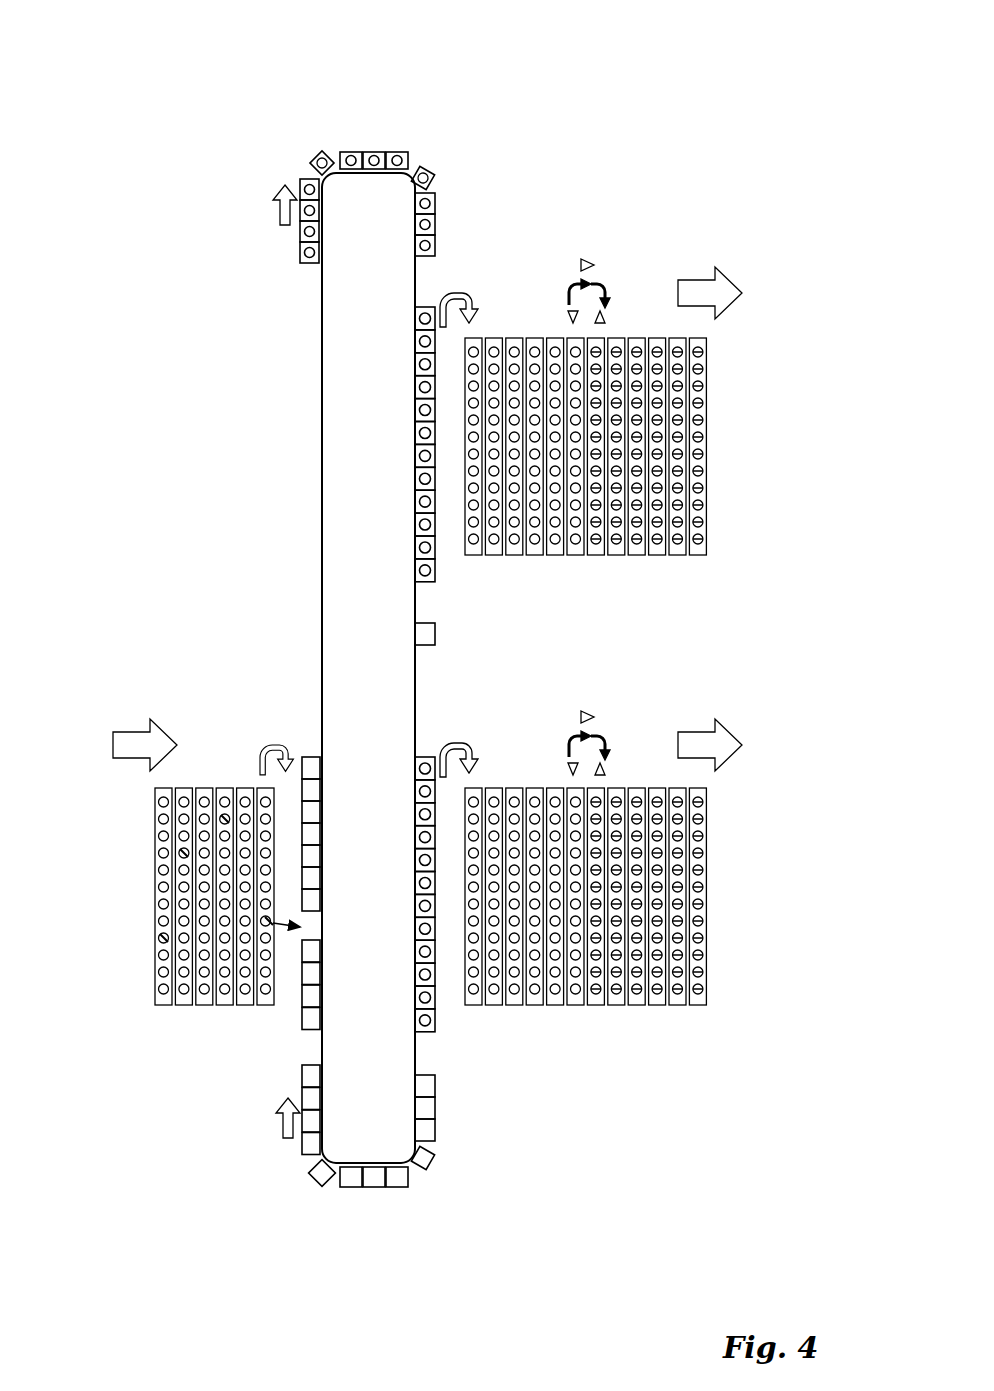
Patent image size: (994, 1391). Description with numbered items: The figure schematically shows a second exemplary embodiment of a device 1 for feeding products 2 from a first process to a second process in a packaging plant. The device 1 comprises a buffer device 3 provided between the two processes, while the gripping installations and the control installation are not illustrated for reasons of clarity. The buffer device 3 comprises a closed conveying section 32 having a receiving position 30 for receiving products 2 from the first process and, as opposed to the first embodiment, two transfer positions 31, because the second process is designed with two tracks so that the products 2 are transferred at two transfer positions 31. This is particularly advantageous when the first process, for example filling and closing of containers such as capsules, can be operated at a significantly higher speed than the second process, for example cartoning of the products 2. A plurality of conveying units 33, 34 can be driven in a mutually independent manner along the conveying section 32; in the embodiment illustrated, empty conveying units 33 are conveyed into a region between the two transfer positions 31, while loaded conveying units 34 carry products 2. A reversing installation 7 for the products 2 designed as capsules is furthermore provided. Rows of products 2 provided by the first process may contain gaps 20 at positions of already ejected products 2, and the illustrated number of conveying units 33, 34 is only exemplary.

The device 1 is at (210, 150).
The products 2 is at (202, 955).
The buffer device 3 is at (336, 102).
The reversing installation 7 is at (590, 245).
The gaps 20 is at (128, 675).
The receiving position 30 is at (286, 1044).
The transfer position 31 is at (449, 591).
The conveying section 32 is at (415, 1057).
The conveying units 33 is at (430, 636).
The conveying units 34 is at (430, 167).